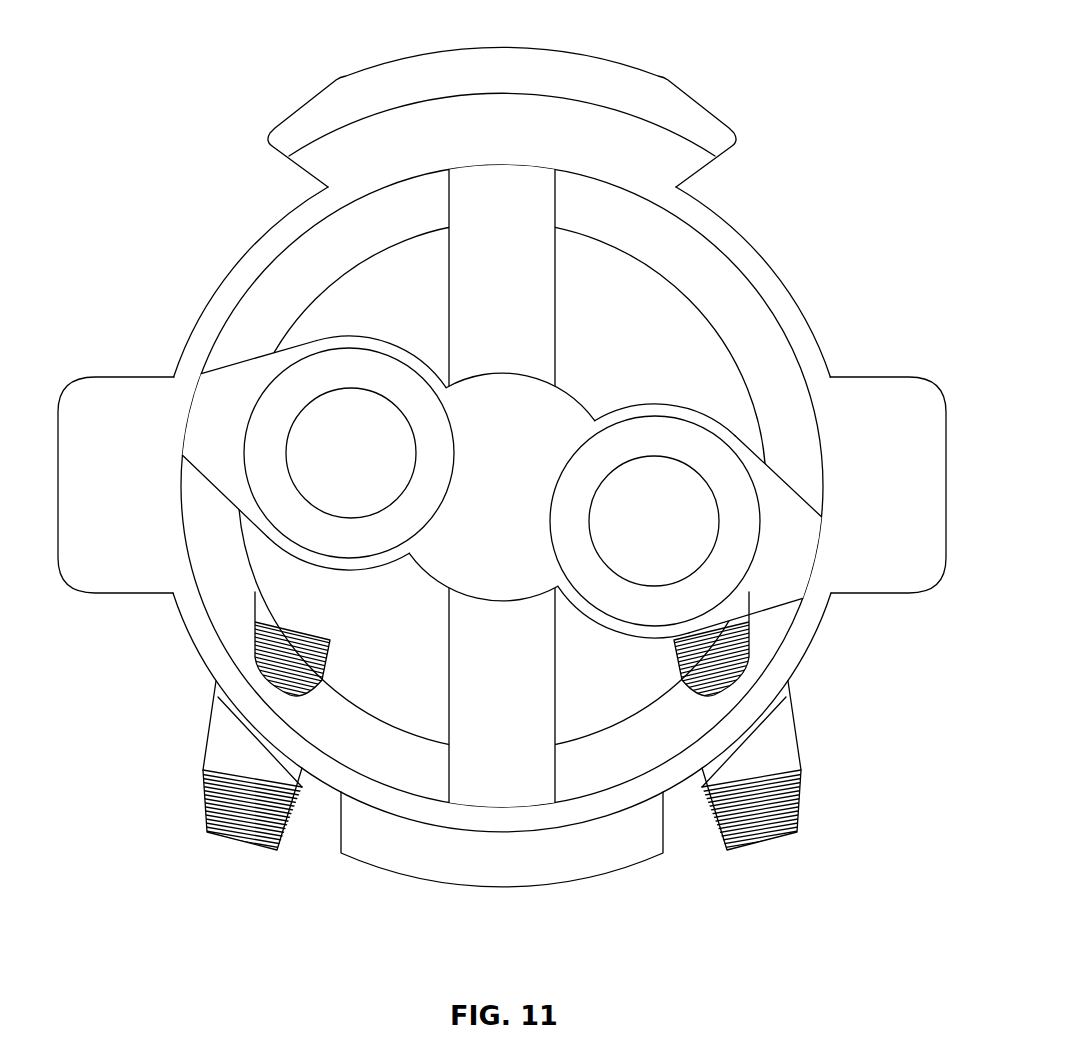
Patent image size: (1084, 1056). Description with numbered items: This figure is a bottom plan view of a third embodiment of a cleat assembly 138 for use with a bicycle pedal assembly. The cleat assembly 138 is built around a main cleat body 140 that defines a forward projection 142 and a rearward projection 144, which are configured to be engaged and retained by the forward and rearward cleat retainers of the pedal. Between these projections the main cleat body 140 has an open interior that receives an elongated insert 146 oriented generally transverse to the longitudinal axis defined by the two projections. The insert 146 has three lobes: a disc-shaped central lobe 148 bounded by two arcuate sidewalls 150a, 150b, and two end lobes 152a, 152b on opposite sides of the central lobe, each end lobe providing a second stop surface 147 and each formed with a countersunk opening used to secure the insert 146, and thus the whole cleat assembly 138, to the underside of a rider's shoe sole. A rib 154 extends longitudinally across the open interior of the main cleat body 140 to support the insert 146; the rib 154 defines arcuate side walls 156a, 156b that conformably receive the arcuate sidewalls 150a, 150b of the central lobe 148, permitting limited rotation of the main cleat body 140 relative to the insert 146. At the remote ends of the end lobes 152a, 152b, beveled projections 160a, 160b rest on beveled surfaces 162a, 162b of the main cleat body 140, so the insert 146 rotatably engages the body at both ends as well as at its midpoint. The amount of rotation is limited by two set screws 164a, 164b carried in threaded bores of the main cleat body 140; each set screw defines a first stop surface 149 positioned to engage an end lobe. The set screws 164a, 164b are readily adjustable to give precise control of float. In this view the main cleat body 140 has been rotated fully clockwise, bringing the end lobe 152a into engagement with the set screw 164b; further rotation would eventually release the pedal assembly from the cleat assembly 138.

The cleat assembly 138 is at (185, 187).
The main cleat body 140 is at (200, 286).
The forward projection 142 is at (563, 50).
The rearward projection 144 is at (385, 862).
The elongated insert 146 is at (592, 405).
The second stop surface 147 is at (272, 532).
The central lobe 148 is at (455, 573).
The first stop surface 149 is at (304, 628).
The arcuate sidewall 150a is at (563, 380).
The arcuate sidewall 150b is at (412, 558).
The end lobe 152a is at (722, 426).
The end lobe 152b is at (327, 333).
The rib 154 is at (537, 259).
The arcuate side wall 156a is at (501, 374).
The arcuate side wall 156b is at (540, 601).
The beveled projection 160a is at (790, 605).
The beveled projection 160b is at (212, 384).
The beveled surface 162a is at (740, 306).
The beveled surface 162b is at (215, 618).
The set screw 164a is at (205, 818).
The set screw 164b is at (800, 818).